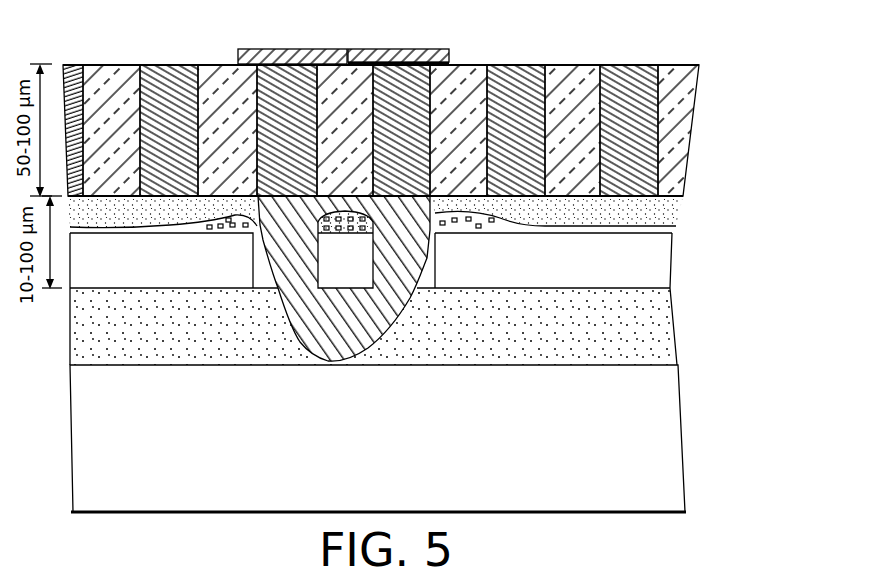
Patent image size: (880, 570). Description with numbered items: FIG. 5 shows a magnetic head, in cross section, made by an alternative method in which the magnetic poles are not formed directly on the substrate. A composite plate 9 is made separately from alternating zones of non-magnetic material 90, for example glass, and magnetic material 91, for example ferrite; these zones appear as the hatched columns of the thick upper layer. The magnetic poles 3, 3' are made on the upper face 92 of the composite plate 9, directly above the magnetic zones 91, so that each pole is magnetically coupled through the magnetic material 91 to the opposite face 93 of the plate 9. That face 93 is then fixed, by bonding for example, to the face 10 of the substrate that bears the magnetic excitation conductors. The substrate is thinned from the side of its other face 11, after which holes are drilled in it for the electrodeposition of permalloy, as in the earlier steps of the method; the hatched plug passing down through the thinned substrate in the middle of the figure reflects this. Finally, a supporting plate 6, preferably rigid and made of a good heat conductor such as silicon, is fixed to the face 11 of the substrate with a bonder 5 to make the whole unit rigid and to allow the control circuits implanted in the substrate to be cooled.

The magnetic pole 3 is at (292, 32).
The magnetic pole 3' is at (417, 35).
The bonder 5 is at (652, 332).
The supporting plate 6 is at (652, 428).
The composite plate 9 is at (412, 98).
The face of the substrate 10 is at (672, 240).
The face of the substrate 11 is at (651, 294).
The non-magnetic material 90 is at (572, 77).
The magnetic material 91 is at (633, 84).
The face of the composite plate 92 is at (190, 60).
The face of the composite plate 93 is at (120, 188).